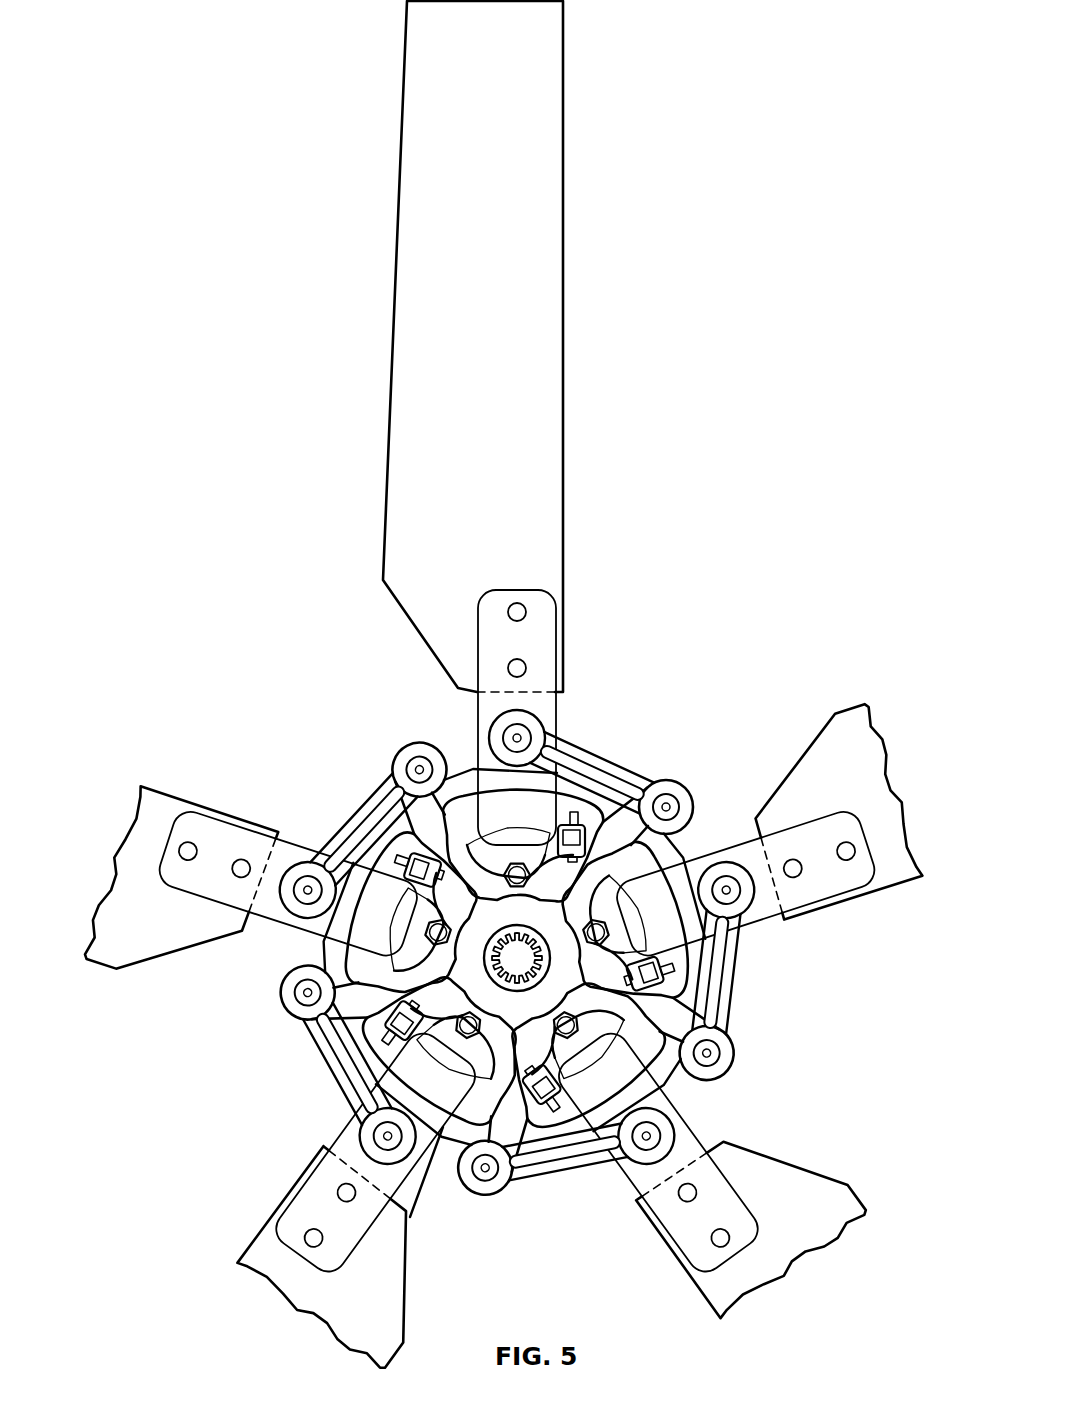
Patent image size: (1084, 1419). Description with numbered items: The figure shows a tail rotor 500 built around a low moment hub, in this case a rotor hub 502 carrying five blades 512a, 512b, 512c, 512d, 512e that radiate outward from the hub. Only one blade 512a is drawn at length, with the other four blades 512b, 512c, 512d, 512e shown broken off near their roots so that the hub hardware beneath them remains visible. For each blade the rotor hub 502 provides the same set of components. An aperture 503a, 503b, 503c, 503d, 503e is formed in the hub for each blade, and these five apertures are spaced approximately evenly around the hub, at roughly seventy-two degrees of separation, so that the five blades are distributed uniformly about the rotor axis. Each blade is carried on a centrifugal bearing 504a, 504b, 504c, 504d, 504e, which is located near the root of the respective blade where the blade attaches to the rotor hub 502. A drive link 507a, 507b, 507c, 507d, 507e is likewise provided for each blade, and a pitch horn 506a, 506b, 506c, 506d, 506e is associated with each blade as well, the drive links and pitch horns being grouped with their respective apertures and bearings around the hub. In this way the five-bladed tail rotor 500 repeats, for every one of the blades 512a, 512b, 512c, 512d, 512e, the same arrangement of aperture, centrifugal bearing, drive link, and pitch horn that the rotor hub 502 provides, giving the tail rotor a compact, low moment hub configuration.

The tail rotor 500 is at (736, 525).
The rotor hub 502 is at (380, 1118).
The aperture 503a is at (560, 800).
The aperture 503b is at (700, 937).
The aperture 503c is at (605, 1170).
The aperture 503d is at (402, 1062).
The aperture 503e is at (402, 882).
The centrifugal bearing 504a is at (489, 733).
The centrifugal bearing 504b is at (720, 860).
The centrifugal bearing 504c is at (674, 1118).
The centrifugal bearing 504d is at (416, 1166).
The centrifugal bearing 504e is at (292, 920).
The pitch horn 506a is at (580, 812).
The pitch horn 506b is at (672, 965).
The pitch horn 506c is at (555, 1110).
The pitch horn 506d is at (385, 1033).
The pitch horn 506e is at (410, 855).
The drive link 507a is at (660, 790).
The drive link 507b is at (738, 1050).
The drive link 507c is at (512, 1196).
The drive link 507d is at (300, 1020).
The drive link 507e is at (398, 760).
The blade 512a is at (393, 284).
The blade 512b is at (905, 882).
The blade 512c is at (862, 1200).
The blade 512d is at (265, 1245).
The blade 512e is at (112, 972).